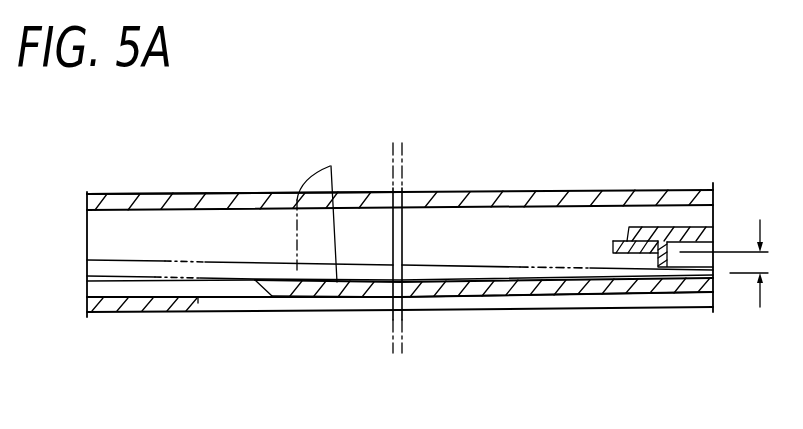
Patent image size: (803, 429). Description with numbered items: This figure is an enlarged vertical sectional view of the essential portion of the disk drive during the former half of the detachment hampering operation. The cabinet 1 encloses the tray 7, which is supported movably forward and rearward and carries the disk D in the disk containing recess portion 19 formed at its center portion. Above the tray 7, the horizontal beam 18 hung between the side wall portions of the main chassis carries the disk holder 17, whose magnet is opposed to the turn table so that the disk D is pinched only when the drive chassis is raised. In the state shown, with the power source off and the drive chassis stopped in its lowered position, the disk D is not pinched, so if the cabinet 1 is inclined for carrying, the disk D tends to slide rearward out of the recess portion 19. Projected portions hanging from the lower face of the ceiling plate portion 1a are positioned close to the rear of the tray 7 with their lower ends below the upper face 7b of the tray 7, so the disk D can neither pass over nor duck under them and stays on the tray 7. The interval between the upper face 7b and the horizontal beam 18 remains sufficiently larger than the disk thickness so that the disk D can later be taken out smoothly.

The cabinet 1 is at (471, 183).
The ceiling plate portion 1a is at (197, 203).
The tray 7 is at (162, 307).
The upper face of the tray 7b is at (217, 277).
The disk holder 17 is at (682, 233).
The horizontal beam 18 is at (613, 245).
The disk containing recess portion 19 is at (280, 292).
The disk D is at (319, 211).